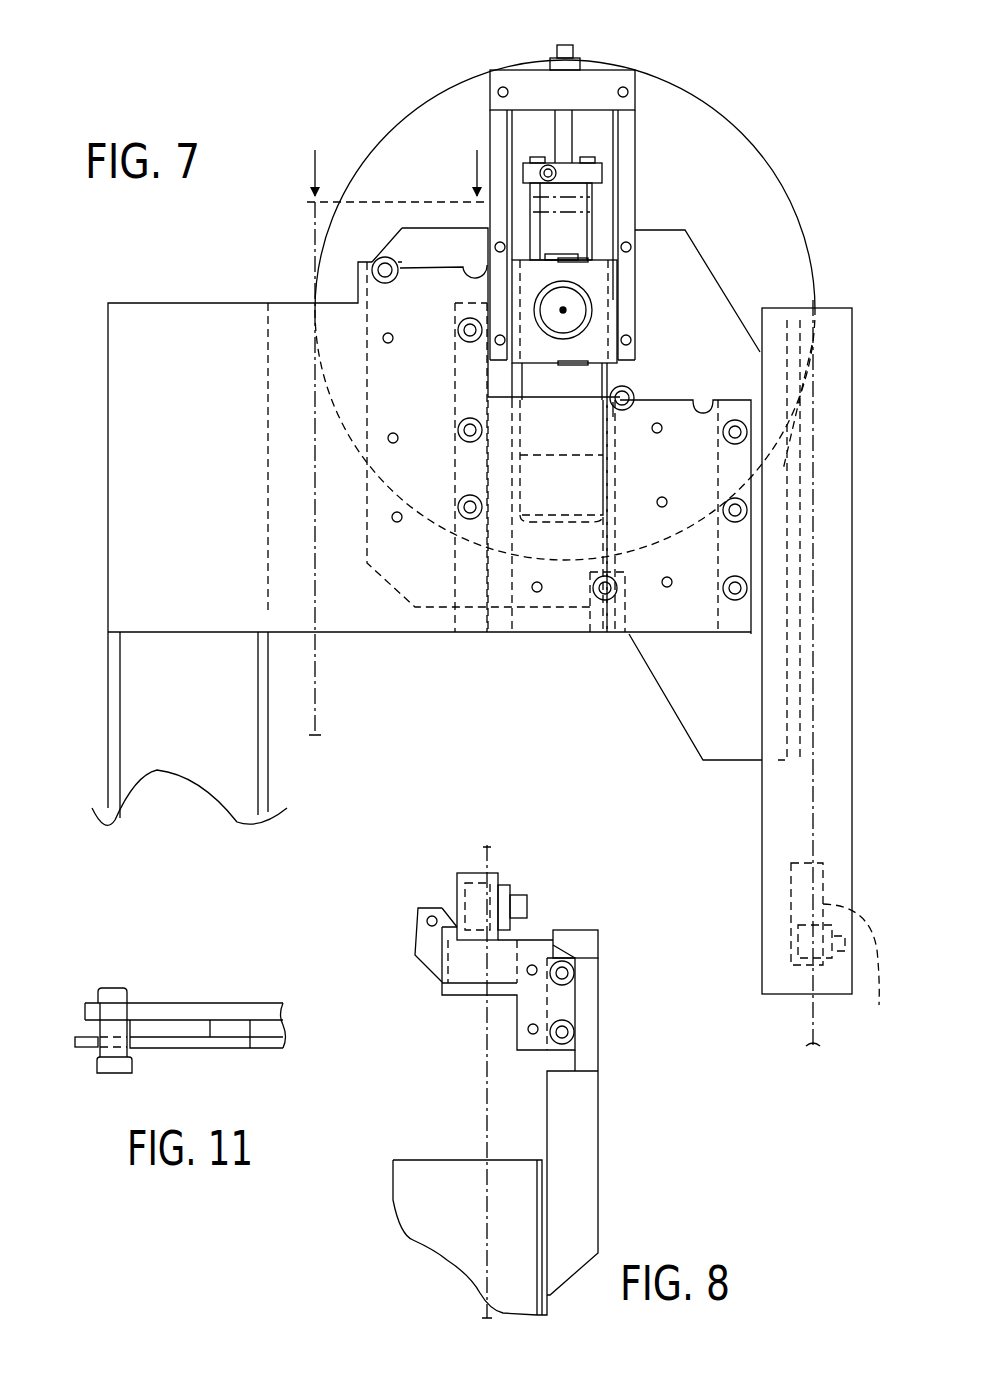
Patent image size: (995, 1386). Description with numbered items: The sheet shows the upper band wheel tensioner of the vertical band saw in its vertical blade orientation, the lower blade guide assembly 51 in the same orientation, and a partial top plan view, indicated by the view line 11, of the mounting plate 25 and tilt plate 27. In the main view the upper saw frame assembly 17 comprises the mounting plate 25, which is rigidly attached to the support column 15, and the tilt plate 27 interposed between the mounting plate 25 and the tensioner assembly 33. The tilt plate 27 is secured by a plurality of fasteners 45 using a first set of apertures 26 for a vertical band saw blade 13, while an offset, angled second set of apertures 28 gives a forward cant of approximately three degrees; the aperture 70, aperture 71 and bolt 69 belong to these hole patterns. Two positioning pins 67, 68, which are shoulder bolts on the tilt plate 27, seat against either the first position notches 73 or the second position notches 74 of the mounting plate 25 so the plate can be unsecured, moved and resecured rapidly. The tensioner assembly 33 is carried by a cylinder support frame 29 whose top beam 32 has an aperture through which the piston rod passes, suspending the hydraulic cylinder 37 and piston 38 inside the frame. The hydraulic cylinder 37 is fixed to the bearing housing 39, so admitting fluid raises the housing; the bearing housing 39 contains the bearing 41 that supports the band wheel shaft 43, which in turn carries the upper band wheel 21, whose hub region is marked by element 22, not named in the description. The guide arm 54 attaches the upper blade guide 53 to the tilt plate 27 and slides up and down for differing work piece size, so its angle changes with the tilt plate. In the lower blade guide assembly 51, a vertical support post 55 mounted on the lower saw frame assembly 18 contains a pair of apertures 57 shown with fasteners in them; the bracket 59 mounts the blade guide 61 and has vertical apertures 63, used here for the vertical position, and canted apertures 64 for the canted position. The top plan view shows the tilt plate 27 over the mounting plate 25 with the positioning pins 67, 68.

In FIG. 7, the section line 11- 11 is at (395, 159).
In FIG. 7, the band saw blade 13 is at (813, 1018).
In FIG. 8, the band saw blade 13 is at (487, 1103).
In FIG. 7, the support column 15 is at (130, 697).
In FIG. 7, the upper saw frame assembly 17 is at (428, 80).
In FIG. 8, the lower saw frame assembly 18 is at (440, 1177).
In FIG. 7, the upper band wheel 21 is at (402, 120).
In FIG. 7, the hub block 22 is at (566, 308).
In FIG. 7, the mounting plate 25 is at (340, 612).
In FIG. 11, the mounting plate 25 is at (265, 1052).
In FIG. 7, the first set of apertures 26 is at (460, 328).
In FIG. 7, the tilt plate 27 is at (710, 714).
In FIG. 11, the tilt plate 27 is at (250, 1003).
In FIG. 7, the second set of apertures 28 is at (392, 513).
In FIG. 7, the cylinder support frame 29 is at (638, 118).
In FIG. 7, the top beam 32 is at (608, 72).
In FIG. 7, the tensioner assembly 33 is at (505, 55).
In FIG. 7, the hydraulic cylinder 37 is at (595, 215).
In FIG. 7, the piston 38 is at (600, 185).
In FIG. 7, the bearing housing 39 is at (615, 250).
In FIG. 7, the bearing 41 is at (600, 290).
In FIG. 7, the band wheel shaft 43 is at (585, 320).
In FIG. 7, the fasteners 45 is at (740, 600).
In FIG. 8, the lower blade guide assembly 51 is at (617, 945).
In FIG. 7, the upper blade guide 53 is at (857, 970).
In FIG. 7, the guide arm 54 is at (762, 795).
In FIG. 8, the vertical support post 55 is at (600, 1143).
In FIG. 8, the apertures 57 is at (570, 1032).
In FIG. 8, the bracket 59 is at (470, 973).
In FIG. 8, the blade guide 61 is at (492, 873).
In FIG. 8, the vertical apertures 63 is at (568, 970).
In FIG. 8, the canted apertures 64 is at (530, 1035).
In FIG. 7, the positioning pin 67 is at (633, 393).
In FIG. 11, the positioning pin 67 is at (127, 993).
In FIG. 7, the positioning pin 68 is at (385, 257).
In FIG. 11, the positioning pin 68 is at (92, 1068).
In FIG. 7, the bolt 69 is at (592, 585).
In FIG. 7, the aperture 70 is at (617, 590).
In FIG. 7, the aperture 71 is at (533, 594).
In FIG. 7, the first position notches 73 is at (355, 283).
In FIG. 7, the second position notches 74 is at (476, 258).